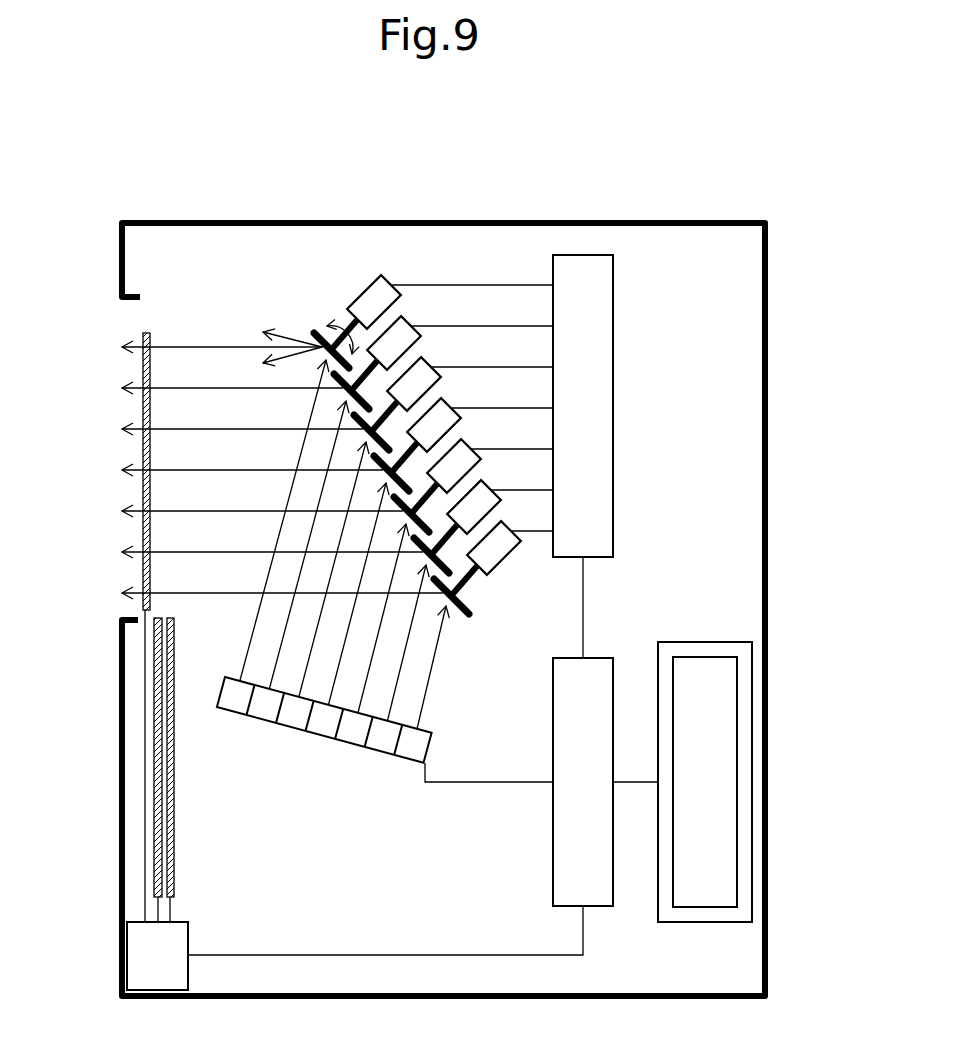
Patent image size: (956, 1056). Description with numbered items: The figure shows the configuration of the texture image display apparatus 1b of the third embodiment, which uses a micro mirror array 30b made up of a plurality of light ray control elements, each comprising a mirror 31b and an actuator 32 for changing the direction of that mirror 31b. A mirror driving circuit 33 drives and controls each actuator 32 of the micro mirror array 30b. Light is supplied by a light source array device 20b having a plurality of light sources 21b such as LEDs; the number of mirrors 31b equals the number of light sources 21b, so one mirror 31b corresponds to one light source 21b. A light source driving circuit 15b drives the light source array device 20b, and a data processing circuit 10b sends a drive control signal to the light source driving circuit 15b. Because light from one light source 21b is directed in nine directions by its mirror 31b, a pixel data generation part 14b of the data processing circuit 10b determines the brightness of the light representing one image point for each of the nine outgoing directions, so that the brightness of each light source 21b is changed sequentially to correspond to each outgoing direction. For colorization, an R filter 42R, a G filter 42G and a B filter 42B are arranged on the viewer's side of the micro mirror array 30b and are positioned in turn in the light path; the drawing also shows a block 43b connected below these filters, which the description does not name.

The texture image display apparatus 1b is at (713, 210).
The micro mirror array 30b is at (438, 413).
The mirror 31b is at (314, 332).
The actuator 32 is at (381, 276).
The mirror driving circuit 33 is at (614, 407).
The light source driving circuit 15b is at (598, 658).
The data processing circuit 10b is at (753, 741).
The pixel data generation part 14b is at (738, 781).
The light source array device 20b is at (385, 745).
The light source 21b is at (290, 729).
The R filter 42R is at (147, 333).
The G filter 42G is at (158, 795).
The B filter 42B is at (171, 807).
The light detection unit 43b is at (190, 927).